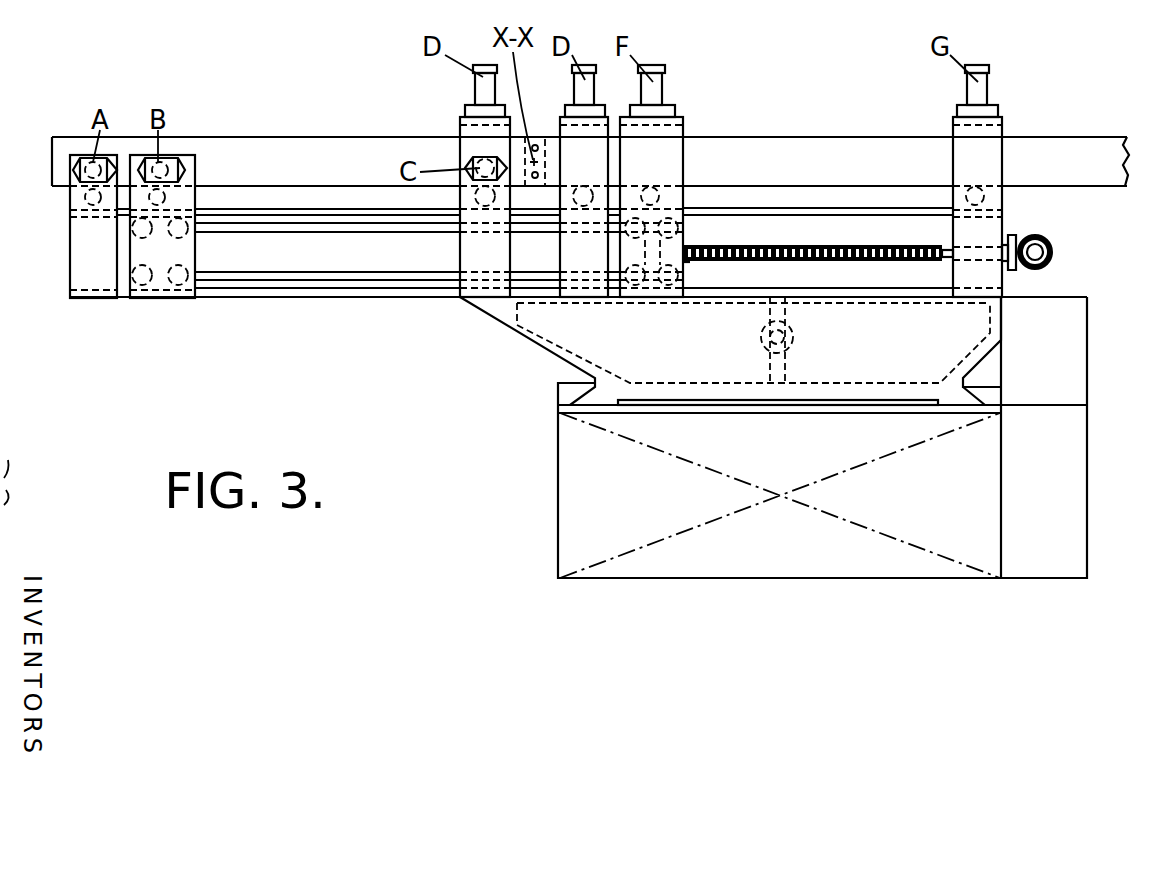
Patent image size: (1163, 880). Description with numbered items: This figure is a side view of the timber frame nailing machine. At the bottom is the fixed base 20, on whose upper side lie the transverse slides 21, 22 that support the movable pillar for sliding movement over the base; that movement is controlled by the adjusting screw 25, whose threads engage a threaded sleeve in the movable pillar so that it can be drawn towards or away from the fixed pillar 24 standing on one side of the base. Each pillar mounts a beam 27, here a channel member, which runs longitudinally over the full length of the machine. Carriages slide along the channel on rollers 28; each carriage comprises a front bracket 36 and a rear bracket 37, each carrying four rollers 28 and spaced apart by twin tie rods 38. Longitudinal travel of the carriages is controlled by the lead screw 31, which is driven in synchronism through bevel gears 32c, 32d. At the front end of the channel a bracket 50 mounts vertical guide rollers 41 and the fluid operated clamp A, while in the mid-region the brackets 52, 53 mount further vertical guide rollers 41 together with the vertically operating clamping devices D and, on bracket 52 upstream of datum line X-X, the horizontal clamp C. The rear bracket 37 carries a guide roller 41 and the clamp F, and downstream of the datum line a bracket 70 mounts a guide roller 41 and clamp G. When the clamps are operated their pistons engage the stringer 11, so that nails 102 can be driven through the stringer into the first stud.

The stringer 11 is at (316, 160).
The fixed base 20 is at (557, 470).
The transverse slide 21 is at (565, 390).
The transverse slide 22 is at (993, 393).
The pillar 24 is at (530, 345).
The adjusting screw 25 is at (798, 336).
The beam 27 is at (313, 268).
The rollers 28 is at (174, 286).
The lead screw 31 is at (826, 258).
The bevel gear 32c is at (1020, 240).
The bevel gear 32d is at (1048, 262).
The front bracket 36 is at (182, 252).
The rear bracket 37 is at (683, 268).
The tie rods 38 is at (436, 271).
The vertical guide roller 41 is at (150, 200).
The bracket 50 is at (95, 268).
The bracket 52 is at (462, 145).
The bracket 53 is at (560, 130).
The bracket 70 is at (993, 127).
The nails 102 is at (539, 175).